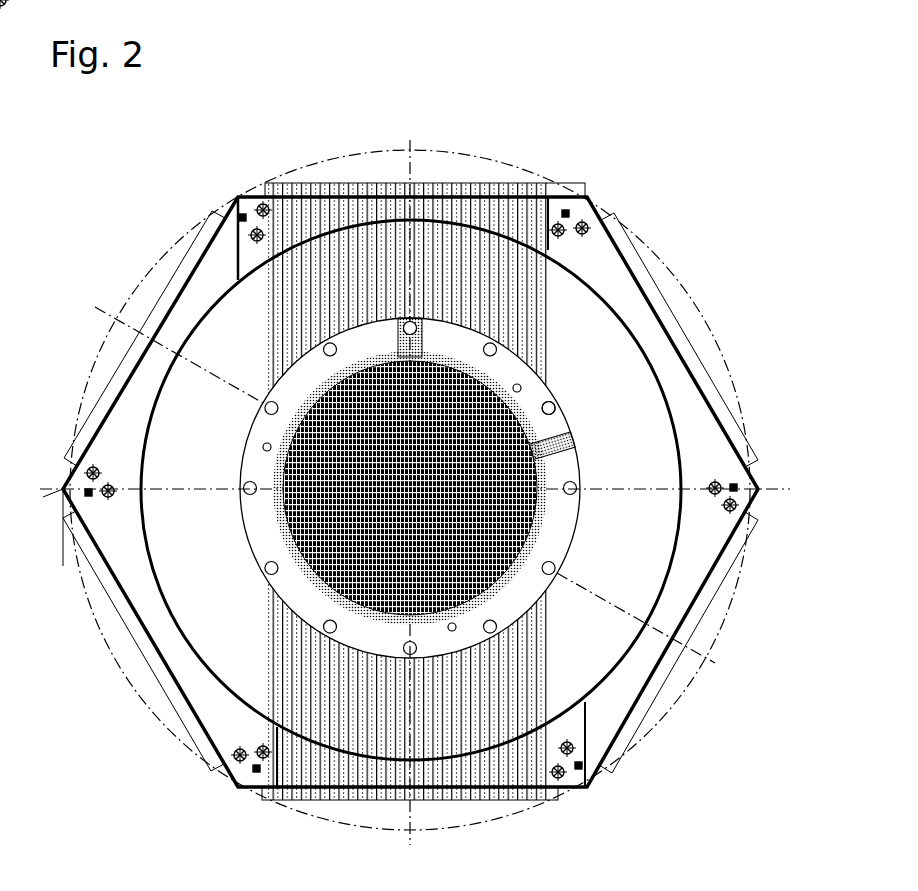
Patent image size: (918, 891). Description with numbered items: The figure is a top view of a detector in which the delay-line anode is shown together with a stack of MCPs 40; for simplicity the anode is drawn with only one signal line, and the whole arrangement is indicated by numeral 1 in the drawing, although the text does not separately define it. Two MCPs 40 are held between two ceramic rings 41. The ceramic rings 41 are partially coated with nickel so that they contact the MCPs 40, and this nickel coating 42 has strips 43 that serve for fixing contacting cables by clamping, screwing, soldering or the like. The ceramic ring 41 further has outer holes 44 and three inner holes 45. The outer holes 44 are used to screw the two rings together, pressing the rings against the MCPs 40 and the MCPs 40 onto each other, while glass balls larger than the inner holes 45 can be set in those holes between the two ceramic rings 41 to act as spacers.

The module 1 is at (758, 347).
The MCPs 40 is at (443, 353).
The ceramic rings 41 is at (517, 383).
The nickel coating 42 is at (556, 402).
The strips 43 is at (575, 441).
The outer holes 44 is at (571, 481).
The inner holes 45 is at (458, 627).